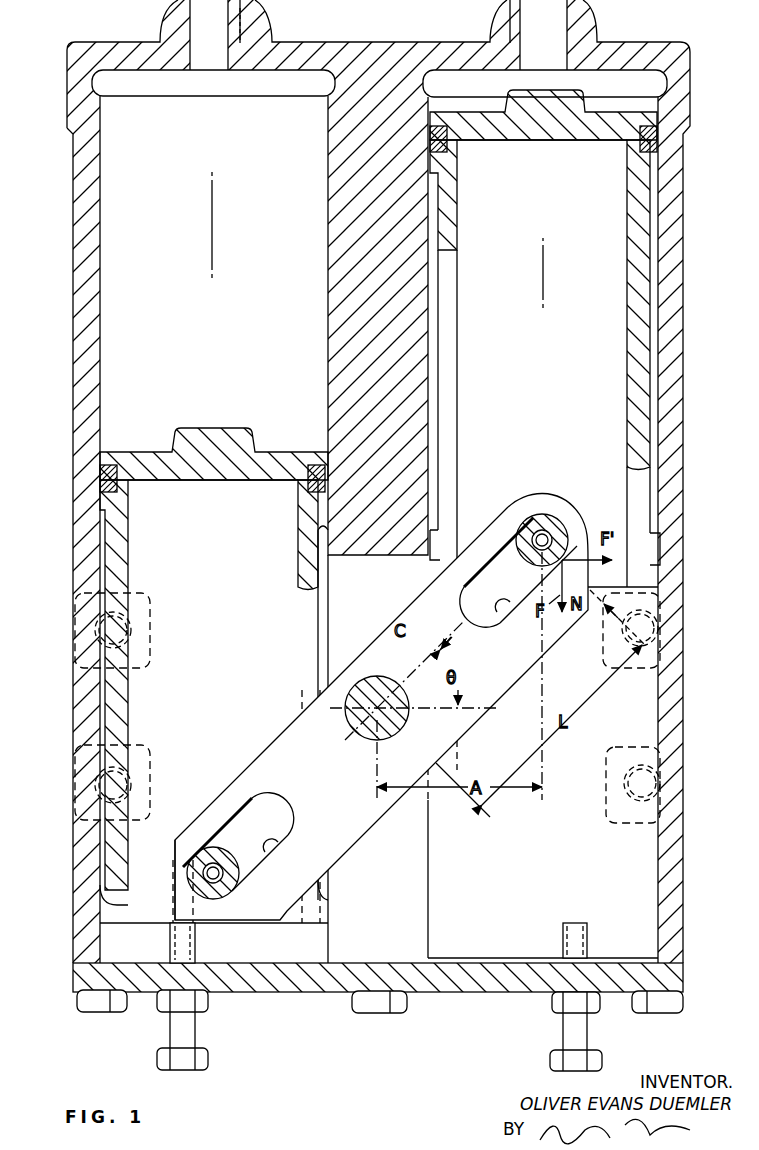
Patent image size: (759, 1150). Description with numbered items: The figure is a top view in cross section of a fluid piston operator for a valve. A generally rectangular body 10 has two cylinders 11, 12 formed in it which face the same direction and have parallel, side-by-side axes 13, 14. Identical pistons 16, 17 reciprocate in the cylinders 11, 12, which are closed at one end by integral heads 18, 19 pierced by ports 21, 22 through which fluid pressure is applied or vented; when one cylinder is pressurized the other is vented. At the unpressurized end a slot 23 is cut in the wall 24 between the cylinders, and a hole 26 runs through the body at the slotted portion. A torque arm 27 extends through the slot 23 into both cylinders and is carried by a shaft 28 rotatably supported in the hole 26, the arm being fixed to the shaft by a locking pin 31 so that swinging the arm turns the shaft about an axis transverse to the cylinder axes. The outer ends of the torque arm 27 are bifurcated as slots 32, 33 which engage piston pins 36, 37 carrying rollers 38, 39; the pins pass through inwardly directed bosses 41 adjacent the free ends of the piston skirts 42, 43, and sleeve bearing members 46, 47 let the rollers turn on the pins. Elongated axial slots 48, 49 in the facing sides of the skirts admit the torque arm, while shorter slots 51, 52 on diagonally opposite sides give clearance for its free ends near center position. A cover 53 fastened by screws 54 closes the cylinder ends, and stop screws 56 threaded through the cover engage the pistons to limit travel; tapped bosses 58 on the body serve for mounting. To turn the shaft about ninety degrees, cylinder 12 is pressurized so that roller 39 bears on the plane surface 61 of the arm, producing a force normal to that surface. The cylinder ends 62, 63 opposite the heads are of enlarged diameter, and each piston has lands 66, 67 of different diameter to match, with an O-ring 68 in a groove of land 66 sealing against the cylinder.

The body 10 is at (70, 386).
The cylinder 11 is at (118, 257).
The cylinder 12 is at (653, 288).
The cylinder axis 13 is at (212, 218).
The cylinder axis 14 is at (543, 280).
The piston 16 is at (168, 450).
The piston 17 is at (630, 106).
The cylinder head 18 is at (290, 47).
The cylinder head 19 is at (613, 43).
The port 21 is at (233, 16).
The port 22 is at (532, 20).
The slot 23 is at (407, 900).
The wall 24 is at (337, 315).
The hole 26 is at (376, 680).
The torque arm 27 is at (388, 814).
The shaft 28 is at (380, 725).
The locking pin 31 is at (440, 740).
The slot 32 is at (267, 790).
The slot 33 is at (458, 633).
The piston pin 36 is at (210, 845).
The piston pin 37 is at (545, 535).
The roller 38 is at (222, 860).
The roller 39 is at (530, 540).
The boss 41 is at (185, 895).
The piston skirt 42 is at (143, 857).
The piston skirt 43 is at (620, 510).
The sleeve bearing member 46 is at (240, 894).
The sleeve bearing member 47 is at (553, 538).
The axial slot 48 is at (305, 633).
The axial slot 49 is at (450, 378).
The slot 51 is at (117, 892).
The slot 52 is at (643, 477).
The cover 53 is at (473, 985).
The screw 54 is at (100, 1003).
The stop screw 56 is at (193, 1040).
The tapped boss 58 is at (80, 650).
The plane surface 61 is at (266, 853).
The enlarged diameter end 62 is at (113, 942).
The enlarged diameter end 63 is at (643, 912).
The land 66 is at (317, 462).
The land 67 is at (325, 909).
The O-ring 68 is at (100, 470).